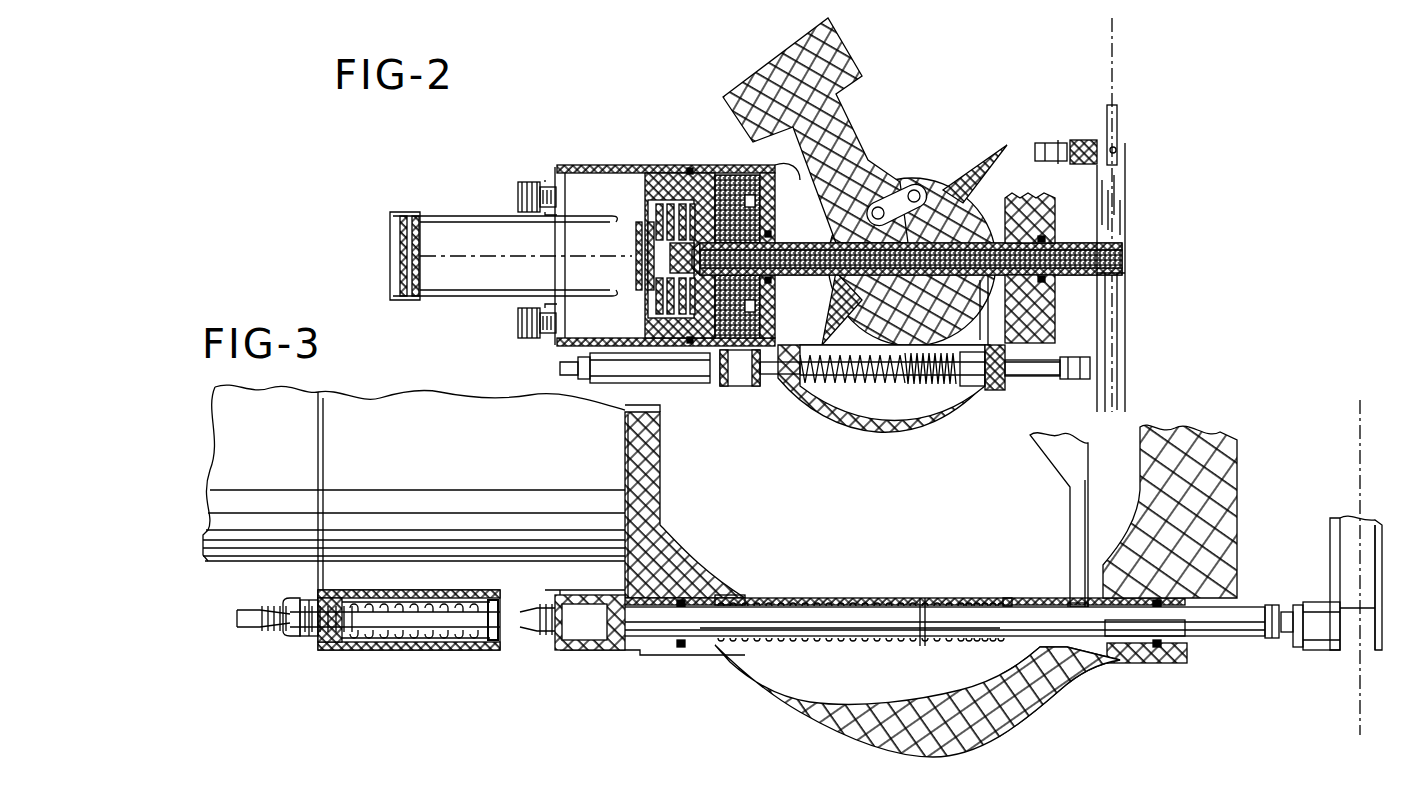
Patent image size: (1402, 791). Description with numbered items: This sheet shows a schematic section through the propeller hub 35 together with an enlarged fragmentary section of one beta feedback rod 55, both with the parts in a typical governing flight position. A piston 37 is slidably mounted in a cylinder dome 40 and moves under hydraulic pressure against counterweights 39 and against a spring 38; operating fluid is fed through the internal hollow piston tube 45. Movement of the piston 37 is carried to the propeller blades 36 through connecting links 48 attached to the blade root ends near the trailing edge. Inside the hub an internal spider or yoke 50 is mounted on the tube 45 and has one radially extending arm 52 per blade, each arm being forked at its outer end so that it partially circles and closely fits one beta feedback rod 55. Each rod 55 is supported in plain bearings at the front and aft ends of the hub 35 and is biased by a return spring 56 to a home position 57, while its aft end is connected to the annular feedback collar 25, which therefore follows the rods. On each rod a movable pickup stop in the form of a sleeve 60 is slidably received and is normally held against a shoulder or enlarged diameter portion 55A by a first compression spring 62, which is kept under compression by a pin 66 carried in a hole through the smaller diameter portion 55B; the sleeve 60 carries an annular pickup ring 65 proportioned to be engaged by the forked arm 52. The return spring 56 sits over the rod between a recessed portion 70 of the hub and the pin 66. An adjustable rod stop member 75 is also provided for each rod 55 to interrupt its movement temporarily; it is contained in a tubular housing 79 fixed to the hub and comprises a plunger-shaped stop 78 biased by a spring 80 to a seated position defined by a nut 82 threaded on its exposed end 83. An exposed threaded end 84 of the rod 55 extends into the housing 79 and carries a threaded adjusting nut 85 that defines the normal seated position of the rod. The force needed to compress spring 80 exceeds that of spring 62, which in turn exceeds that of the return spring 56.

In FIG. 2, the annular feedback collar 25 is at (1130, 192).
In FIG. 3, the annular feedback collar 25 is at (1330, 552).
In FIG. 2, the propeller hub 35 is at (882, 418).
In FIG. 3, the propeller hub 35 is at (818, 714).
In FIG. 2, the propeller blades 36 is at (975, 165).
In FIG. 2, the piston 37 is at (660, 176).
In FIG. 3, the piston 37 is at (612, 640).
In FIG. 2, the spring 38 is at (420, 222).
In FIG. 2, the counterweights 39 is at (852, 55).
In FIG. 2, the cylinder dome 40 is at (563, 350).
In FIG. 3, the cylinder dome 40 is at (486, 470).
In FIG. 2, the piston tube 45 is at (1123, 249).
In FIG. 2, the connecting links 48 is at (898, 190).
In FIG. 2, the yoke 50 is at (964, 347).
In FIG. 2, the yoke arms 52 is at (995, 347).
In FIG. 2, the beta feedback rod 55 is at (1048, 145).
In FIG. 3, the beta feedback rod 55 is at (1227, 654).
In FIG. 3, the shoulder 55A is at (1125, 645).
In FIG. 3, the smaller diameter portion 55B is at (858, 640).
In FIG. 2, the return spring 56 is at (824, 372).
In FIG. 3, the return spring 56 is at (776, 606).
In FIG. 2, the home position 57 is at (1105, 398).
In FIG. 3, the home position 57 is at (1360, 494).
In FIG. 3, the sleeve 60 is at (1003, 600).
In FIG. 3, the first compression spring 62 is at (960, 600).
In FIG. 3, the pickup ring 65 is at (990, 600).
In FIG. 3, the pin 66 is at (918, 600).
In FIG. 3, the recessed portion 70 is at (730, 655).
In FIG. 3, the rod stop member 75 is at (429, 623).
In FIG. 3, the plunger-shaped stop 78 is at (492, 640).
In FIG. 3, the tubular housing 79 is at (578, 642).
In FIG. 3, the stop spring 80 is at (410, 640).
In FIG. 3, the nut 82 is at (296, 636).
In FIG. 3, the exposed end 83 is at (265, 630).
In FIG. 3, the exposed threaded end 84 is at (542, 636).
In FIG. 3, the adjusting nut 85 is at (575, 600).